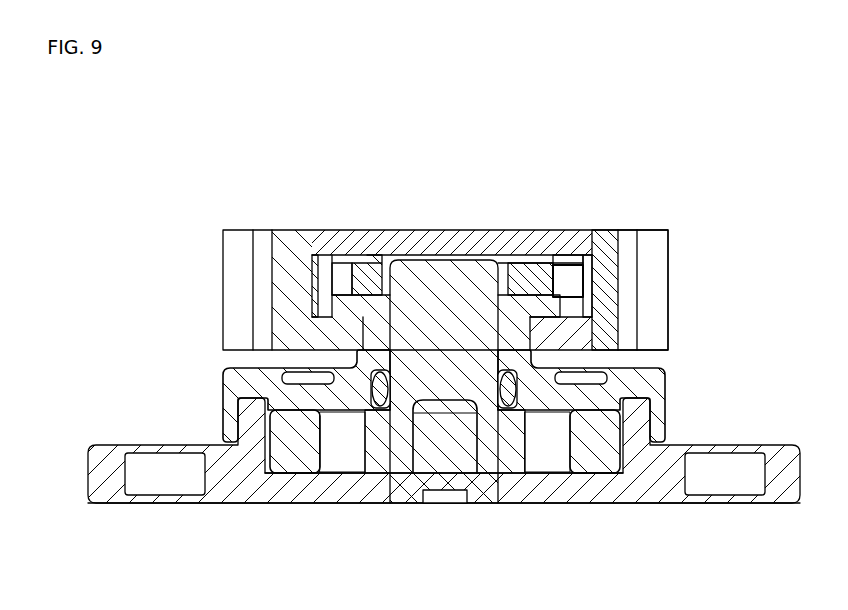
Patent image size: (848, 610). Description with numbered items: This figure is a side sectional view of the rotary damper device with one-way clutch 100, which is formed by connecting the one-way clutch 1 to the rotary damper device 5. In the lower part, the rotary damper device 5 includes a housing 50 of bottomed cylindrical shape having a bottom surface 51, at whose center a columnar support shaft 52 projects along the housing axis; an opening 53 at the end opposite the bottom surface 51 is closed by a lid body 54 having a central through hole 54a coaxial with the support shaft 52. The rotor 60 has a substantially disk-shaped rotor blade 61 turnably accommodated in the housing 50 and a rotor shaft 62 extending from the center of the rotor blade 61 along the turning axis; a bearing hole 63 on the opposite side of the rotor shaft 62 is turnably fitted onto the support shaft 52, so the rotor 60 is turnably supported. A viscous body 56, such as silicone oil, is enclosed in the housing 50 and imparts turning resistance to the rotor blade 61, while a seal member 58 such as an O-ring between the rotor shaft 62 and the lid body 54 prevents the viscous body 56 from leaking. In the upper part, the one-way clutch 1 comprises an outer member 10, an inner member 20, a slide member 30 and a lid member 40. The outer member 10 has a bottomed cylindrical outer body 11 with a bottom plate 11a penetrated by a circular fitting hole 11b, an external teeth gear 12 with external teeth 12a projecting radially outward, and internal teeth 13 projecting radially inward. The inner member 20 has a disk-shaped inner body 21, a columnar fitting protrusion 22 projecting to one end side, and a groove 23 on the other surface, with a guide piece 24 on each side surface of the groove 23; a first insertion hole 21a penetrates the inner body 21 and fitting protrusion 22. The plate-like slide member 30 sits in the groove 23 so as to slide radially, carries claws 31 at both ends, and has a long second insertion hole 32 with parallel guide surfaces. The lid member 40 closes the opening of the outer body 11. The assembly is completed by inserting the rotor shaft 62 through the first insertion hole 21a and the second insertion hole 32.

The one-way clutch 1 is at (292, 220).
The rotary damper device 5 is at (702, 519).
The outer member 10 is at (650, 228).
The outer body 11 is at (606, 232).
The bottom plate 11a is at (350, 312).
The fitting hole 11b is at (362, 344).
The external teeth gear 12 is at (221, 238).
The external teeth 12a is at (244, 266).
The internal teeth 13 is at (331, 282).
The inner member 20 is at (305, 265).
The inner body 21 is at (540, 305).
The first insertion hole 21a is at (505, 260).
The fitting protrusion 22 is at (560, 335).
The groove 23 is at (342, 285).
The guide piece 24 is at (512, 262).
The slide member 30 is at (366, 275).
The claws 31 is at (575, 277).
The second insertion hole 32 is at (528, 280).
The lid member 40 is at (430, 240).
The housing 50 is at (633, 506).
The bottom surface 51 is at (500, 505).
The support shaft 52 is at (430, 442).
The opening 53 is at (610, 369).
The lid body 54 is at (668, 392).
The through hole 54a is at (384, 375).
The viscous body 56 is at (546, 500).
The seal member 58 is at (290, 380).
The rotor 60 is at (340, 500).
The rotor blade 61 is at (300, 500).
The rotor shaft 62 is at (450, 280).
The bearing hole 63 is at (461, 504).
The rotary damper device with one-way clutch 100 is at (728, 246).